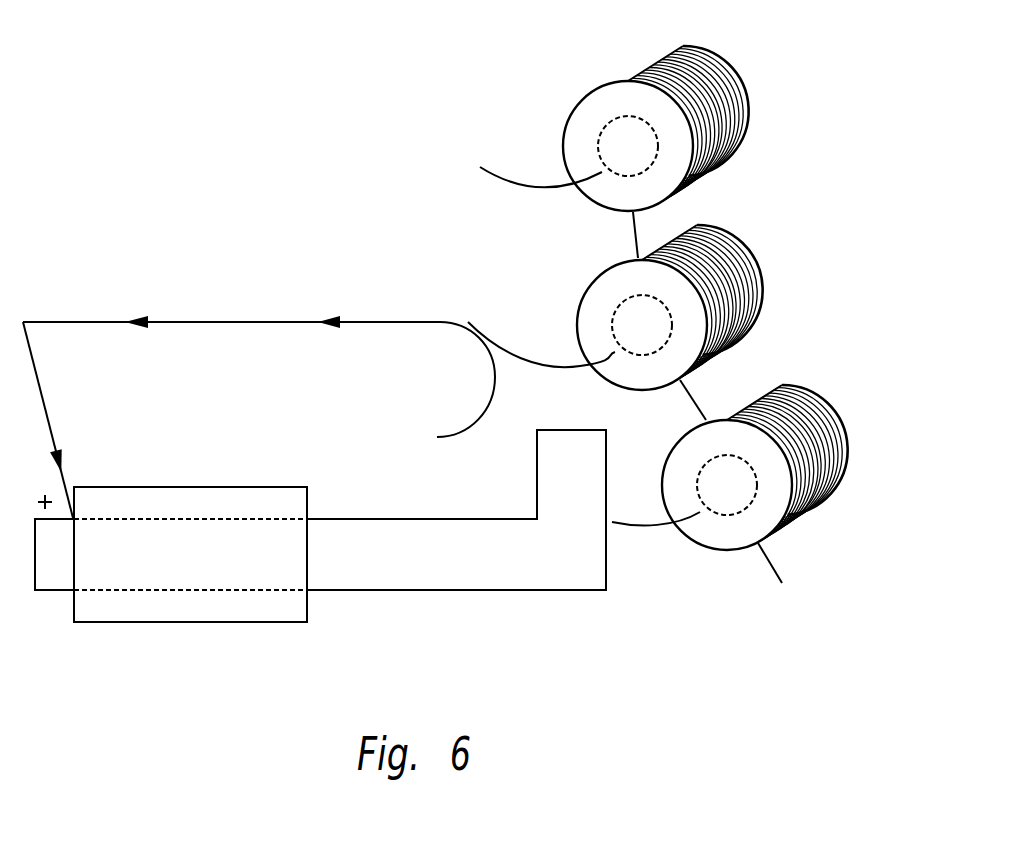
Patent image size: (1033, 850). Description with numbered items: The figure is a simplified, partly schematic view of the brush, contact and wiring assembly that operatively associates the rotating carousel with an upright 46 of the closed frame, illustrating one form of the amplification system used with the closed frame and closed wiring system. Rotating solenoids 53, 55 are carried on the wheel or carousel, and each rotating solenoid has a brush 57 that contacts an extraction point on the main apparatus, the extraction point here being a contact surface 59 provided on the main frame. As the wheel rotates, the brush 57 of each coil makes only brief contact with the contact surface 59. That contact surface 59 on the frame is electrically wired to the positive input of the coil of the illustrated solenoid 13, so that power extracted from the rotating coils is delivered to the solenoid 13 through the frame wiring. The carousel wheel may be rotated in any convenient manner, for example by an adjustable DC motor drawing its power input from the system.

The solenoid 13 is at (164, 662).
The upright 46 is at (600, 467).
The rotating solenoid 53 is at (733, 277).
The rotating solenoid 55 is at (692, 173).
The brush 57 is at (525, 360).
The contact surface 59 is at (463, 430).